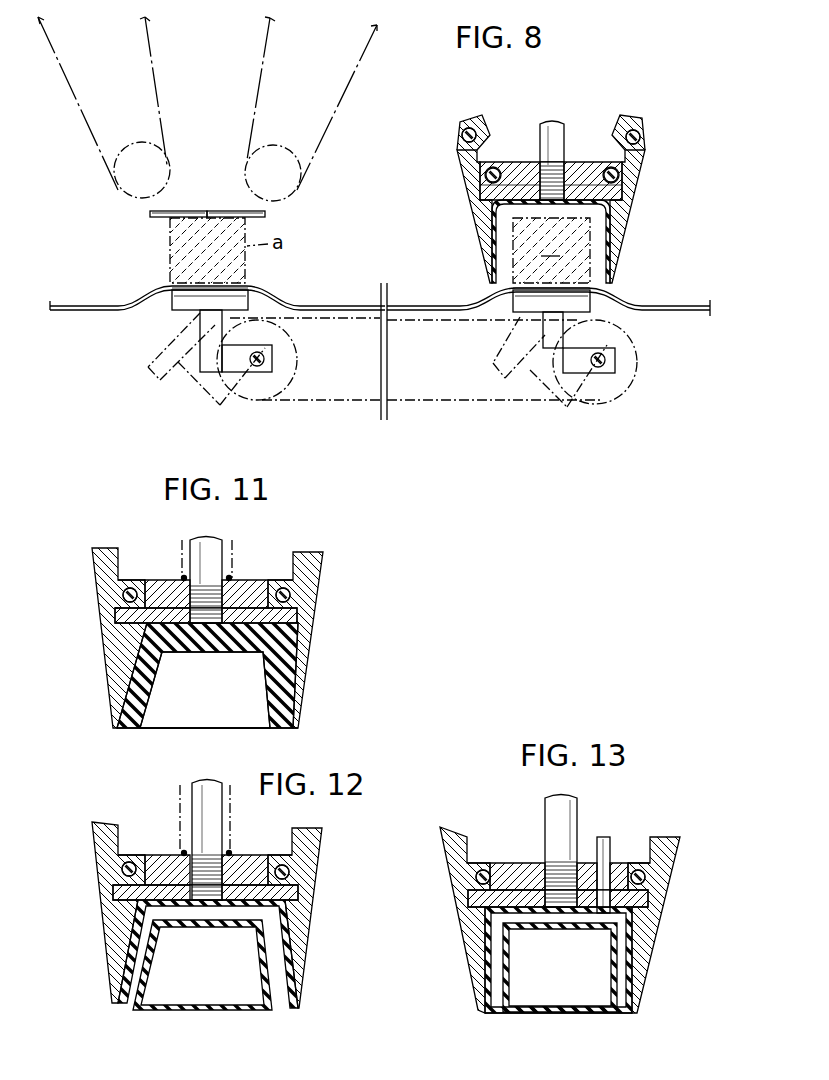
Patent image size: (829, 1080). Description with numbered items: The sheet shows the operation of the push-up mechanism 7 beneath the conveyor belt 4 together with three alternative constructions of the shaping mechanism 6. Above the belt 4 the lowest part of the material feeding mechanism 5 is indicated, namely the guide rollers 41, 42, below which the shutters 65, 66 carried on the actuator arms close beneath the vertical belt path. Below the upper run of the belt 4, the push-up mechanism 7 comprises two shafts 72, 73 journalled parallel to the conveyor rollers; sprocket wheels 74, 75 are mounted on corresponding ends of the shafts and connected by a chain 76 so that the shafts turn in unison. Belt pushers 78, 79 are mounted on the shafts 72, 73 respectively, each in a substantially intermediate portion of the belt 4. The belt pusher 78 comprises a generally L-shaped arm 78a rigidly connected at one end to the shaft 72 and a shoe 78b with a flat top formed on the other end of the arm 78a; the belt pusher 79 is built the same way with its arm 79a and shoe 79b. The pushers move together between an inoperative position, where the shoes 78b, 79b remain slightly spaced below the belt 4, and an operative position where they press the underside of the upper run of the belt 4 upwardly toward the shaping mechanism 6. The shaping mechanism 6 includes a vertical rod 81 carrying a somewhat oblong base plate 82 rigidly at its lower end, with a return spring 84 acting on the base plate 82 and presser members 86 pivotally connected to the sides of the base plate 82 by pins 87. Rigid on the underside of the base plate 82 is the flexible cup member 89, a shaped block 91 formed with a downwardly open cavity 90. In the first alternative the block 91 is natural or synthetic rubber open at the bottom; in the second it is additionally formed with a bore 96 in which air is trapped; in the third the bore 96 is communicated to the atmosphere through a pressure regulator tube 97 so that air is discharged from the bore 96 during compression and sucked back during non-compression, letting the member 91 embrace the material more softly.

In FIG. 8, the endless conveyor belt 4 is at (90, 306).
In FIG. 8, the material feeding mechanism 5 is at (208, 146).
In FIG. 8, the shaping mechanism 6 is at (565, 196).
In FIG. 11, the shaping mechanism 6 is at (218, 637).
In FIG. 12, the shaping mechanism 6 is at (213, 905).
In FIG. 13, the shaping mechanism 6 is at (572, 913).
In FIG. 8, the push-up mechanism 7 is at (293, 285).
In FIG. 8, the guide roller 41 is at (120, 192).
In FIG. 8, the guide roller 42 is at (300, 192).
In FIG. 8, the shutter 65 is at (192, 211).
In FIG. 8, the coactive shutter 66 is at (236, 211).
In FIG. 8, the shaft 72 is at (272, 358).
In FIG. 8, the shaft 73 is at (615, 370).
In FIG. 8, the sprocket wheel 74 is at (268, 397).
In FIG. 8, the sprocket wheel 75 is at (600, 405).
In FIG. 8, the chain 76 is at (448, 402).
In FIG. 8, the belt pusher 78 is at (172, 304).
In FIG. 8, the L-shaped arm 78a is at (206, 372).
In FIG. 8, the shoe 78b is at (250, 291).
In FIG. 8, the belt pusher 79 is at (513, 302).
In FIG. 8, the L-shaped arm 79a is at (527, 368).
In FIG. 8, the shoe 79b is at (622, 309).
In FIG. 8, the rod 81 is at (565, 140).
In FIG. 11, the rod 81 is at (207, 540).
In FIG. 12, the rod 81 is at (203, 786).
In FIG. 13, the rod 81 is at (553, 809).
In FIG. 11, the base plate 82 is at (252, 585).
In FIG. 12, the base plate 82 is at (165, 860).
In FIG. 13, the base plate 82 is at (523, 870).
In FIG. 11, the return spring 84 is at (181, 578).
In FIG. 12, the return spring 84 is at (231, 851).
In FIG. 8, the presser member 86 is at (466, 222).
In FIG. 11, the presser member 86 is at (110, 670).
In FIG. 12, the presser member 86 is at (100, 948).
In FIG. 13, the presser member 86 is at (465, 963).
In FIG. 11, the pin 87 is at (128, 588).
In FIG. 12, the pin 87 is at (128, 861).
In FIG. 13, the pin 87 is at (483, 870).
In FIG. 11, the flexible cup member 89 is at (128, 731).
In FIG. 12, the flexible cup member 89 is at (122, 1006).
In FIG. 13, the flexible cup member 89 is at (506, 1013).
In FIG. 11, the cavity 90 is at (197, 655).
In FIG. 12, the cavity 90 is at (158, 950).
In FIG. 13, the cavity 90 is at (563, 935).
In FIG. 11, the shaped block 91 is at (147, 695).
In FIG. 12, the shaped block 91 is at (140, 996).
In FIG. 13, the shaped block 91 is at (510, 986).
In FIG. 12, the bore 96 is at (130, 1012).
In FIG. 13, the bore 96 is at (498, 1005).
In FIG. 13, the pressure regulator tube 97 is at (612, 841).